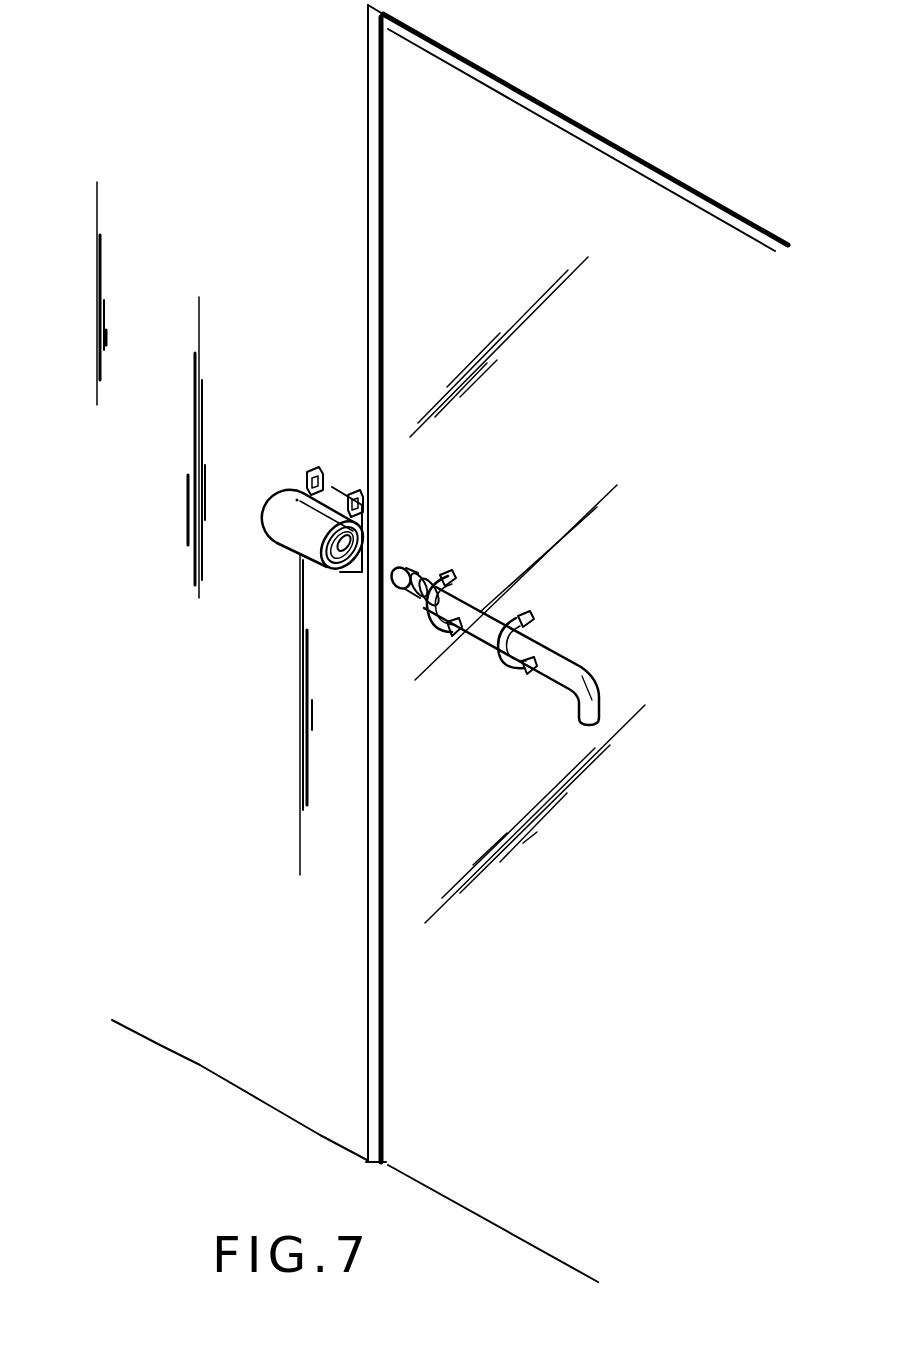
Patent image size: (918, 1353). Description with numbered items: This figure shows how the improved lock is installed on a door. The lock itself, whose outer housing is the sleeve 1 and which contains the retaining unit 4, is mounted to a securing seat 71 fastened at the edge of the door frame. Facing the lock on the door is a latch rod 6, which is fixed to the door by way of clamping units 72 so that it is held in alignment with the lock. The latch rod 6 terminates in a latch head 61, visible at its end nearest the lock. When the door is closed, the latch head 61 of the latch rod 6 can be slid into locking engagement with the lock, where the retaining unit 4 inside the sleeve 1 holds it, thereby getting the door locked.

The sleeve 1 is at (283, 537).
The retaining unit 4 is at (343, 549).
The latch rod 6 is at (490, 622).
The latch head 61 is at (421, 572).
The securing seat 71 is at (340, 503).
The clamping units 72 is at (518, 630).